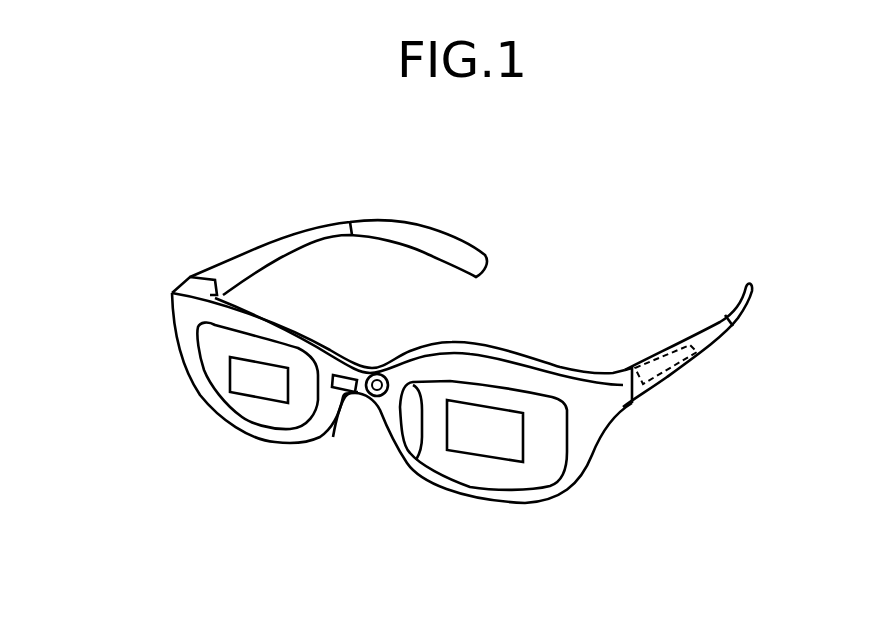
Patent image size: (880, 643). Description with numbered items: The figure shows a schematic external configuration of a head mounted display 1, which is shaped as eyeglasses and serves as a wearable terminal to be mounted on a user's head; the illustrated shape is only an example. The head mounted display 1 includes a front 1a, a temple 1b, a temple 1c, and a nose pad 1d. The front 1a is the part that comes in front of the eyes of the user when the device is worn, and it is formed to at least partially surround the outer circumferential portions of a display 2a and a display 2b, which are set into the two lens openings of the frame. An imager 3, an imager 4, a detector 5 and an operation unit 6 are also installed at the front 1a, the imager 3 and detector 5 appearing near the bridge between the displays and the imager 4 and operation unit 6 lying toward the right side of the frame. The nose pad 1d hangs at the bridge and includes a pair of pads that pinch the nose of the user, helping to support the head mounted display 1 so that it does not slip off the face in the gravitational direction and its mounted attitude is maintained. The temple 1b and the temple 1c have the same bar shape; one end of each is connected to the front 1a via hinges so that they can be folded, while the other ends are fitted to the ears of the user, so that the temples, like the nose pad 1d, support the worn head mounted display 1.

The head mounted display 1 is at (600, 221).
The front 1a is at (512, 358).
The temple 1b is at (300, 243).
The temple 1c is at (705, 340).
The nose pad 1d is at (411, 422).
The display 2a is at (259, 388).
The display 2b is at (485, 448).
The imager 3 is at (378, 396).
The imager 4 is at (572, 370).
The detector 5 is at (352, 393).
The operation unit 6 is at (665, 357).